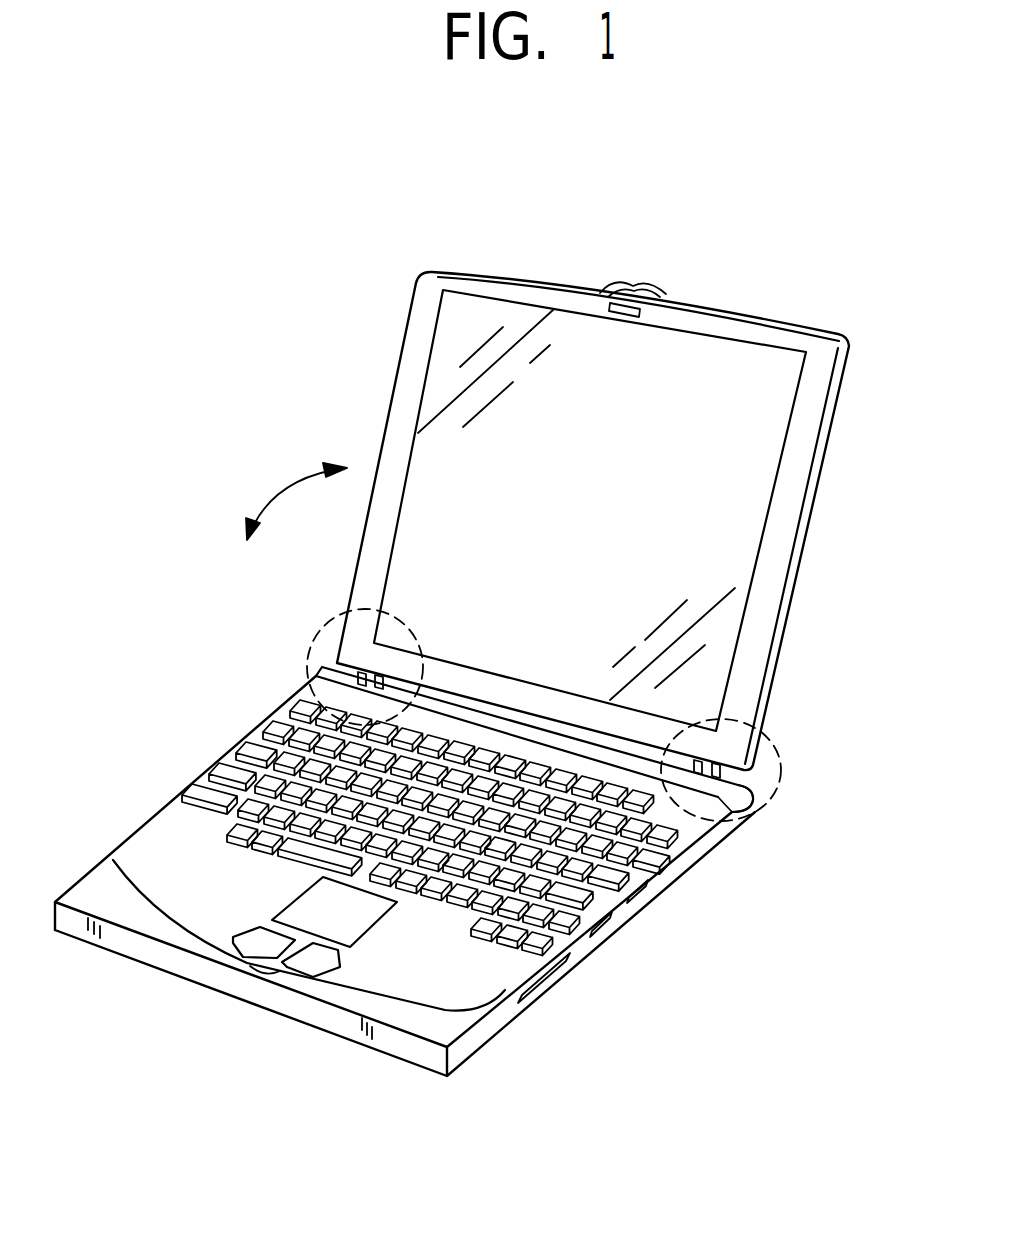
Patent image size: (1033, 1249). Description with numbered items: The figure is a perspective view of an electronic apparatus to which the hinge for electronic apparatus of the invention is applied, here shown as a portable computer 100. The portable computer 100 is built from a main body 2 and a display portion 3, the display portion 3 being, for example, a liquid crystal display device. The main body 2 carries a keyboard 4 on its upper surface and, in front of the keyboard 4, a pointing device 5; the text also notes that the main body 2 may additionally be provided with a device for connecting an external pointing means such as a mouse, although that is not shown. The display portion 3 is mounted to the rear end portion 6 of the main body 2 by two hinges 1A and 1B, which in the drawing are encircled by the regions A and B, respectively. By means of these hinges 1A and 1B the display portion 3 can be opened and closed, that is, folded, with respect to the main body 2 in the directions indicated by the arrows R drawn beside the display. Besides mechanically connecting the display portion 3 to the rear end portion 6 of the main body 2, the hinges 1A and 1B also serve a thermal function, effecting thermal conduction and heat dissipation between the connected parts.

The portable computer 100 is at (690, 268).
The hinge 1A is at (707, 823).
The hinge 1B is at (302, 700).
The main body 2 is at (483, 963).
The display portion 3 is at (738, 427).
The keyboard 4 is at (603, 857).
The pointing device 5 is at (290, 898).
The rear end portion 6 is at (735, 792).
The region A is at (778, 750).
The region B is at (312, 650).
The arrows R is at (275, 498).